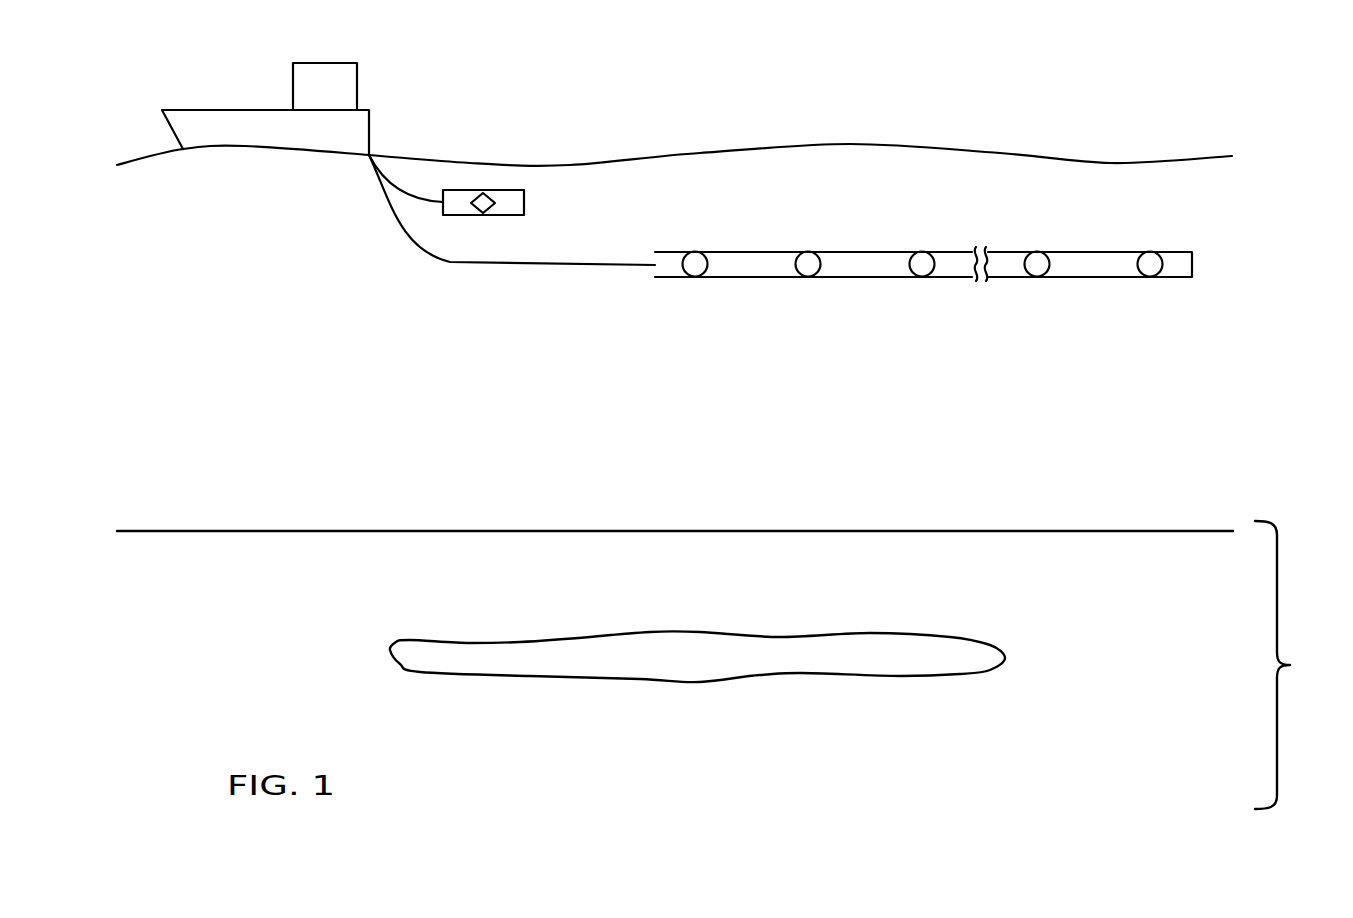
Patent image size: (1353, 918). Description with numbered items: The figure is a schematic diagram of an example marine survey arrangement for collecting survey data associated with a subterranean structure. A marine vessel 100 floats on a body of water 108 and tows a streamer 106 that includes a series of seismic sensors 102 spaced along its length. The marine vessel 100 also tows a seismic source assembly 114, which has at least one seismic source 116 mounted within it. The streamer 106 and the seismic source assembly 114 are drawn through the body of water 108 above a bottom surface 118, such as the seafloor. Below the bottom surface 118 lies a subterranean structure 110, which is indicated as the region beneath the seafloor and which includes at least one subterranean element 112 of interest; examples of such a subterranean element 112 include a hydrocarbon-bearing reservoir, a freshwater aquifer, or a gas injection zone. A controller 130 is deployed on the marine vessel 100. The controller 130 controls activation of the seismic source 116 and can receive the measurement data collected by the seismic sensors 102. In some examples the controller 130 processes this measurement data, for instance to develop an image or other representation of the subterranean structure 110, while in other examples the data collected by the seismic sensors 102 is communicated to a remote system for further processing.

The marine vessel 100 is at (263, 110).
The seismic sensors 102 is at (800, 260).
The streamer 106 is at (1192, 262).
The body of water 108 is at (283, 378).
The subterranean structure 110 is at (1297, 665).
The subterranean element 112 is at (918, 640).
The seismic source assembly 114 is at (524, 202).
The seismic source 116 is at (477, 196).
The bottom surface 118 is at (968, 531).
The controller 130 is at (357, 86).